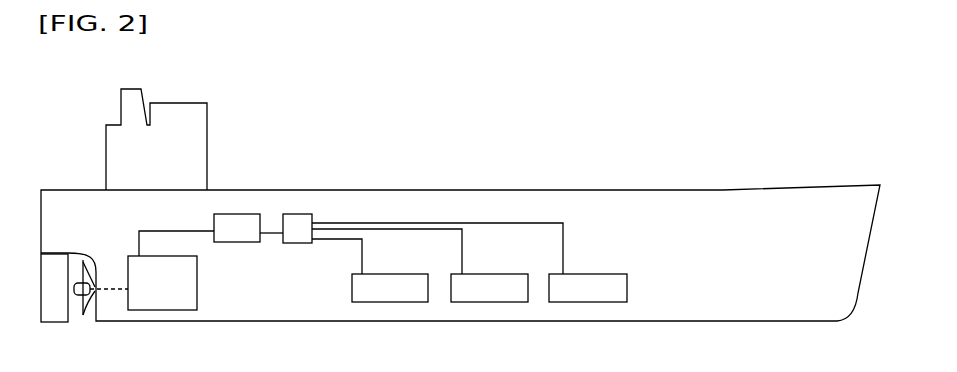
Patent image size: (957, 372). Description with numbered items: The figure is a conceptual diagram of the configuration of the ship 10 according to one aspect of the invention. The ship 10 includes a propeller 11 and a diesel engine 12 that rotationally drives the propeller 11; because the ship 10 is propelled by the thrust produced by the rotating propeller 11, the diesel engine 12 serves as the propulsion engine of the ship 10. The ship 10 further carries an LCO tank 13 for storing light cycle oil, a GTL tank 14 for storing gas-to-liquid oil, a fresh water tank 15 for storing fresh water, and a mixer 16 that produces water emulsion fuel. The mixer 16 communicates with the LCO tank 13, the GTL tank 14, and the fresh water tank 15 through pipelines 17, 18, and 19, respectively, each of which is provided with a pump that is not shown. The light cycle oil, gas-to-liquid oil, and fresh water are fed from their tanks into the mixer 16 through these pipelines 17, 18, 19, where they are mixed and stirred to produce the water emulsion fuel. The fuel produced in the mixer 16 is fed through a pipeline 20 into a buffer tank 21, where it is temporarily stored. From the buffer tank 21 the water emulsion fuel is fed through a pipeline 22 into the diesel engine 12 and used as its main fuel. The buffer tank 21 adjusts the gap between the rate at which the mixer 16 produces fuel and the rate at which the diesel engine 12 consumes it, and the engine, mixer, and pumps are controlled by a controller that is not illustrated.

The ship 10 is at (550, 172).
The propeller 11 is at (85, 302).
The diesel engine 12 is at (163, 295).
The LCO tank 13 is at (588, 292).
The GTL tank 14 is at (490, 293).
The fresh water tank 15 is at (387, 292).
The mixer 16 is at (300, 220).
The pipeline 17 is at (504, 223).
The pipeline 18 is at (412, 229).
The pipeline 19 is at (340, 238).
The pipeline 20 is at (270, 238).
The buffer tank 21 is at (235, 222).
The pipeline 22 is at (143, 222).